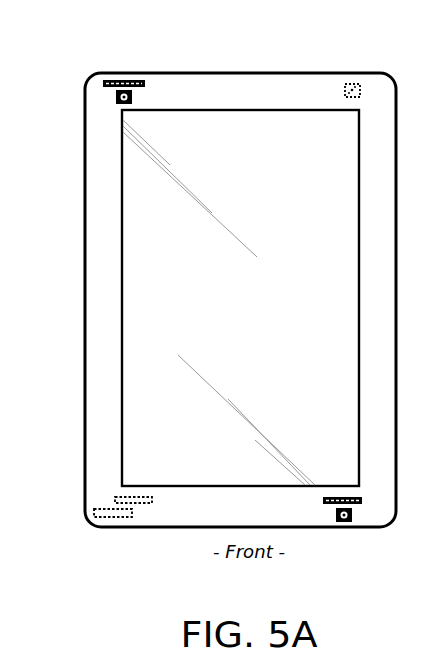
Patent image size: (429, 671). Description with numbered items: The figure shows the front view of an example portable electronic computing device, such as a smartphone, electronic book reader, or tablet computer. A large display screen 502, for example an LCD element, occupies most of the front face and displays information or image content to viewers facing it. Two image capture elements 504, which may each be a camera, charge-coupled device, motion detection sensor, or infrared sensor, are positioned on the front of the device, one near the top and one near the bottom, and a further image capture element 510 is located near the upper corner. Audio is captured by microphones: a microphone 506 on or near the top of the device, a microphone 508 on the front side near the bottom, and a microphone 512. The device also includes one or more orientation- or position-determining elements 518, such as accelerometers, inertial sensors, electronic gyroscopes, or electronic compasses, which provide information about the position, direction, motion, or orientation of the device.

The display screen 502 is at (121, 218).
The image capture elements 504 is at (117, 97).
The microphone 506 is at (130, 80).
The microphone 508 is at (357, 504).
The image capture element 510 is at (350, 83).
The microphone 512 is at (134, 503).
The orientation- or position-determining elements 518 is at (111, 517).